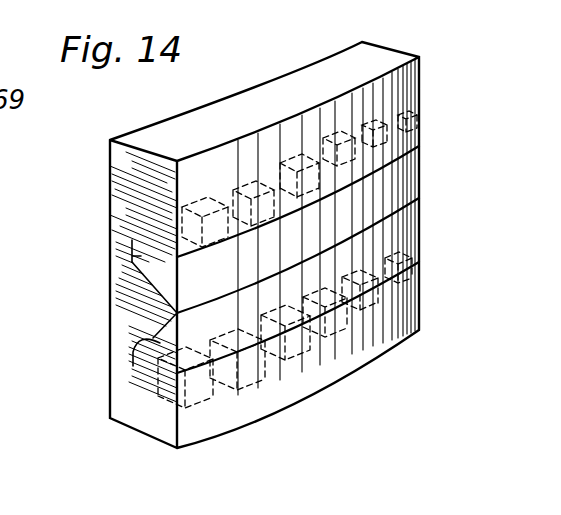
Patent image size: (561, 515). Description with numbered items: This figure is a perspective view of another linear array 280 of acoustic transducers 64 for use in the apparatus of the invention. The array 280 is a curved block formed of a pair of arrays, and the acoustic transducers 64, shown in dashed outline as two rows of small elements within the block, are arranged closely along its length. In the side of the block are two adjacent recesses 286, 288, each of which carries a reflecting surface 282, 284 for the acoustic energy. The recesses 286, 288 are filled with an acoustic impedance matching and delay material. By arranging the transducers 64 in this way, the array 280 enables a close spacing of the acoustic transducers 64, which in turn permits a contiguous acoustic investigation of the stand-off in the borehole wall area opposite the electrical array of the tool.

The acoustic transducers 64 is at (243, 188).
The linear array 280 is at (135, 305).
The reflecting surface 282 is at (152, 276).
The reflecting surface 284 is at (133, 353).
The recess 286 is at (131, 246).
The recess 288 is at (160, 345).